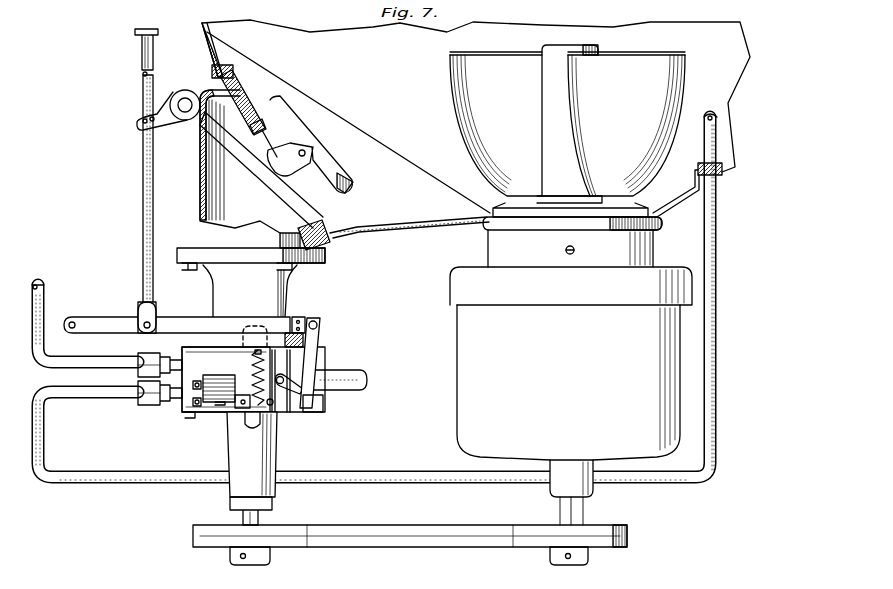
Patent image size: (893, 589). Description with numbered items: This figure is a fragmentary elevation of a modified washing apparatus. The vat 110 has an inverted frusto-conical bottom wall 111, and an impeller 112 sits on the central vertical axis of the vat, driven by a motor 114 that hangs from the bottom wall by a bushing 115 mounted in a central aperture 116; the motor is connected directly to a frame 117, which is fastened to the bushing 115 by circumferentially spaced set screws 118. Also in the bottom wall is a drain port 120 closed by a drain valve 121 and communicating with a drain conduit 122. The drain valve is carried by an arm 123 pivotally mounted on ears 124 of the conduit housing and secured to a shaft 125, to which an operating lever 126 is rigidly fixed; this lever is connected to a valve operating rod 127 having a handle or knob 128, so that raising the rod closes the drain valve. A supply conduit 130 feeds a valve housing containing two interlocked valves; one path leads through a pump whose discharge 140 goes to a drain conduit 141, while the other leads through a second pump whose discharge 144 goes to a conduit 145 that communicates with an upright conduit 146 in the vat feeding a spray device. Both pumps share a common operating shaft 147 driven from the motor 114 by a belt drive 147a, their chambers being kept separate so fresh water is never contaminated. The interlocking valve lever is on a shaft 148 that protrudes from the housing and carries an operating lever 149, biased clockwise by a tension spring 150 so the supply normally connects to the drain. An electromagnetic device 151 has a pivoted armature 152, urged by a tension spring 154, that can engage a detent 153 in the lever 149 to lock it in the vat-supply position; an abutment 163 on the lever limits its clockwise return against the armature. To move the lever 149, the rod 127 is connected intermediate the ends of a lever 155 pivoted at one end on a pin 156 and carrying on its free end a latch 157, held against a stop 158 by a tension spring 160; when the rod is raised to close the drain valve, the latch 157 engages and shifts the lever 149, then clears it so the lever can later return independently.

The vat 110 is at (207, 23).
The bottom wall 111 is at (735, 170).
The impeller 112 is at (676, 76).
The motor 114 is at (465, 350).
The bushing 115 is at (503, 210).
The aperture 116 is at (492, 227).
The frame 117 is at (452, 284).
The set screws 118 is at (574, 249).
The drain port 120 is at (323, 222).
The drain valve 121 is at (292, 115).
The drain conduit 122 is at (200, 200).
The arm 123 is at (266, 167).
The ears 124 is at (194, 91).
The shaft 125 is at (185, 113).
The operating lever 126 is at (160, 99).
The valve operating rod 127 is at (143, 181).
The handle or knob 128 is at (140, 31).
The supply conduit 130 is at (365, 374).
The discharge 140 is at (168, 352).
The drain conduit 141 is at (45, 292).
The discharge 144 is at (167, 401).
The conduit 145 is at (150, 484).
The upright conduit 146 is at (713, 146).
The common operating shaft 147 is at (260, 518).
The belt drive 147a is at (450, 538).
The shaft 148 is at (288, 378).
The operating lever 149 is at (301, 386).
The tension spring 150 is at (284, 338).
The electromagnetic device 151 is at (213, 378).
The armature 152 is at (214, 411).
The detent 153 is at (252, 454).
The tension spring 154 is at (256, 376).
The lever 155 is at (100, 318).
The pin 156 is at (73, 321).
The latch 157 is at (316, 338).
The stop 158 is at (309, 318).
The tension spring 160 is at (292, 331).
The abutment 163 is at (279, 411).